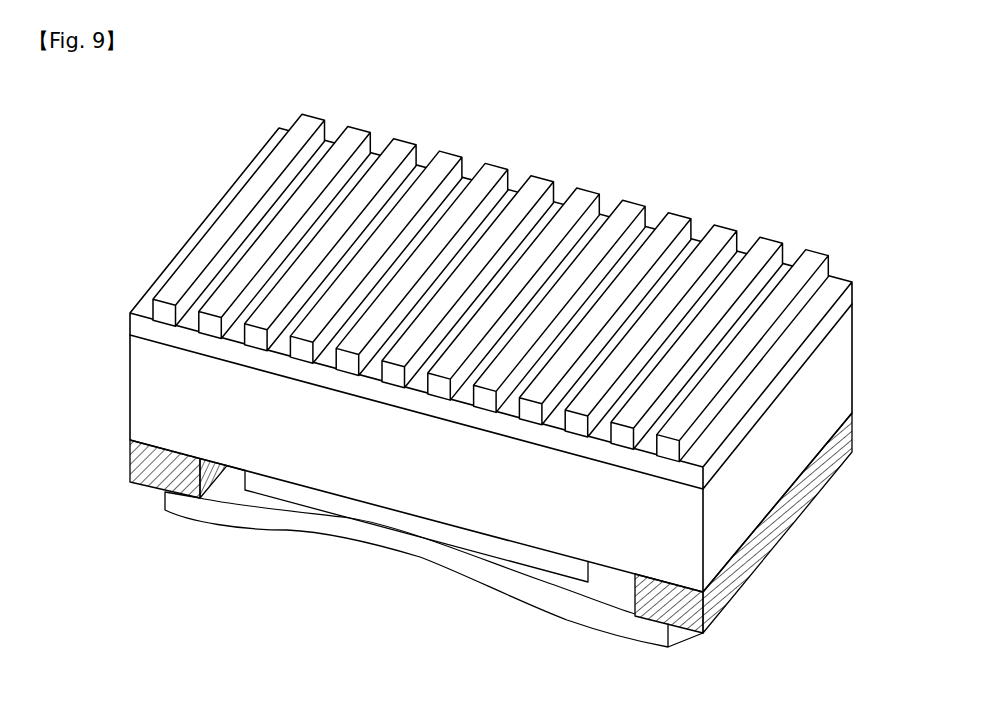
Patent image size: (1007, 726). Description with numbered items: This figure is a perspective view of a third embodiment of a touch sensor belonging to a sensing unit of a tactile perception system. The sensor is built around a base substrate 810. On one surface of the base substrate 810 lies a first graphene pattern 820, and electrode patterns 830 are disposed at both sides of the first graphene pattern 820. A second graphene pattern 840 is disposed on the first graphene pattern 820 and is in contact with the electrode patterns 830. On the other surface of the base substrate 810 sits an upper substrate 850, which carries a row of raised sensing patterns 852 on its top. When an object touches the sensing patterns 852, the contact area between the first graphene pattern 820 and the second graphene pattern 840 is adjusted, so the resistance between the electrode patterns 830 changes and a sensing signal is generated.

The base substrate 810 is at (847, 362).
The first graphene pattern 820 is at (380, 518).
The electrode patterns 830 is at (847, 437).
The second graphene pattern 840 is at (460, 563).
The upper substrate 850 is at (847, 298).
The sensing patterns 852 is at (813, 259).